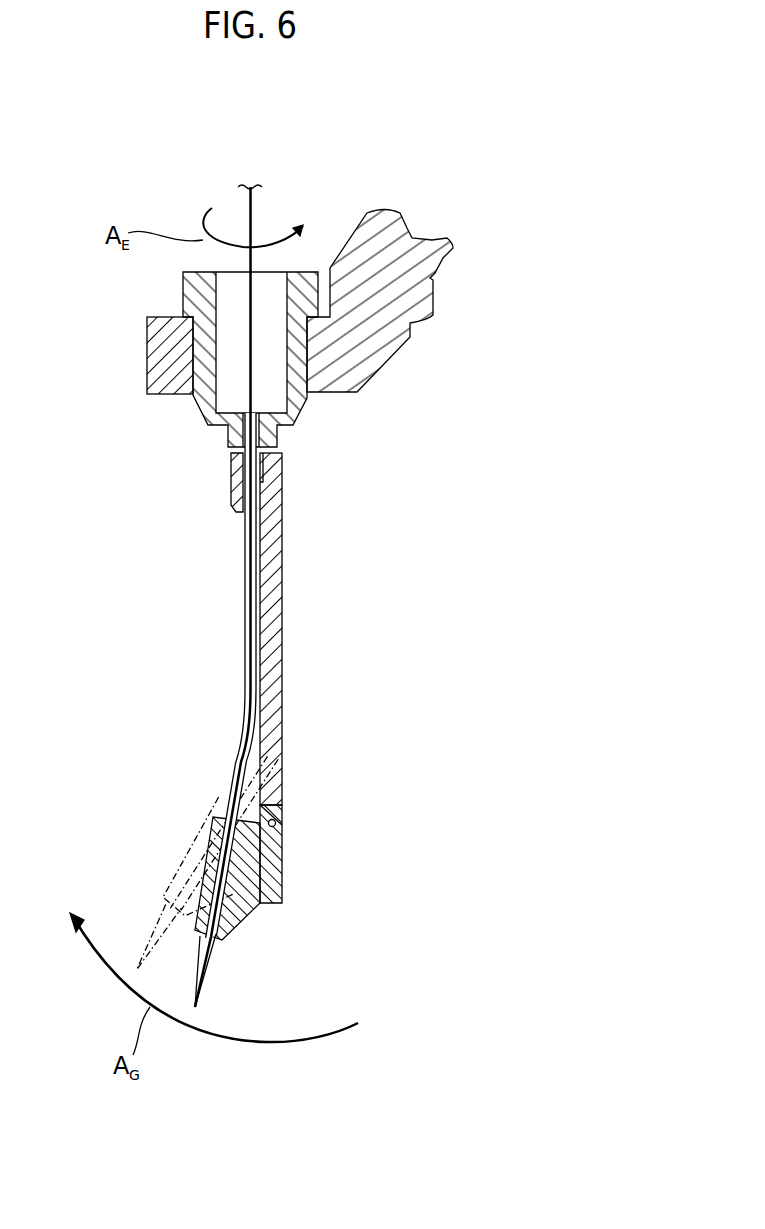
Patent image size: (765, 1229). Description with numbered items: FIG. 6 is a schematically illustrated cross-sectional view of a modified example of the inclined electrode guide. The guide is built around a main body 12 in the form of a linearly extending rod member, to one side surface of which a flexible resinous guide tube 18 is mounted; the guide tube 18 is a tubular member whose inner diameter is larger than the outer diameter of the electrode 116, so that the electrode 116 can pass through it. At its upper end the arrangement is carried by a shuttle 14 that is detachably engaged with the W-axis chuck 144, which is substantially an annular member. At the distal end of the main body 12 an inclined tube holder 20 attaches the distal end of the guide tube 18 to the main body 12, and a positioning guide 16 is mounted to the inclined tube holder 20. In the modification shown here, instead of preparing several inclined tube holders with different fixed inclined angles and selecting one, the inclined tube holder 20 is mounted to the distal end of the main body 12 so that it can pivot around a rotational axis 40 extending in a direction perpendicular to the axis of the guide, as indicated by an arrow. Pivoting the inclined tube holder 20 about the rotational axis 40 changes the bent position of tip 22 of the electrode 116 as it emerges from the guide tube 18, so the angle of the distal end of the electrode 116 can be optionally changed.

The main body 12 is at (270, 578).
The shuttle 14 is at (308, 268).
The positioning guide 16 is at (215, 980).
The guide tube 18 is at (245, 612).
The inclined tube holder 20 is at (248, 912).
The bent position of tip 22 is at (210, 860).
The rotational axis 40 is at (278, 824).
The electrode 116 is at (252, 207).
The W-axis chuck 144 is at (157, 367).